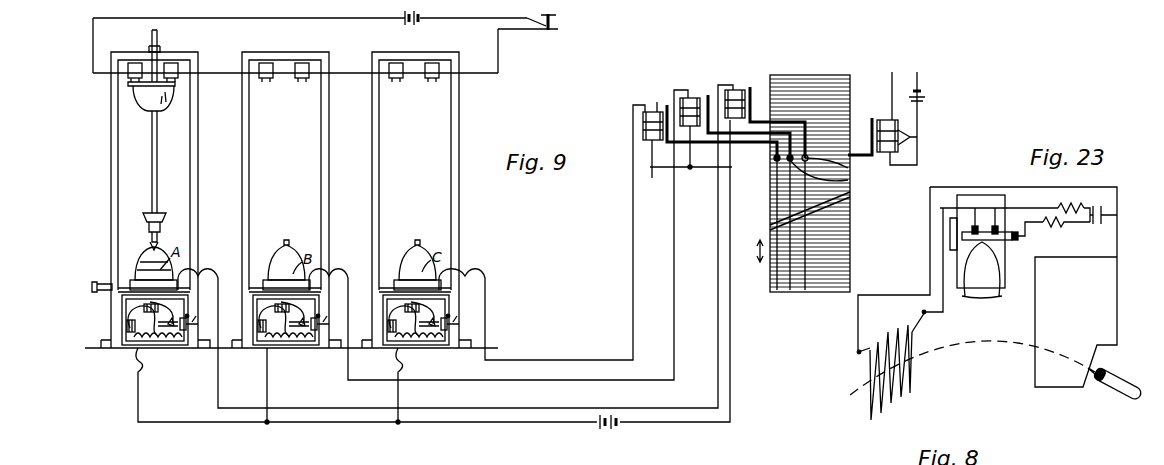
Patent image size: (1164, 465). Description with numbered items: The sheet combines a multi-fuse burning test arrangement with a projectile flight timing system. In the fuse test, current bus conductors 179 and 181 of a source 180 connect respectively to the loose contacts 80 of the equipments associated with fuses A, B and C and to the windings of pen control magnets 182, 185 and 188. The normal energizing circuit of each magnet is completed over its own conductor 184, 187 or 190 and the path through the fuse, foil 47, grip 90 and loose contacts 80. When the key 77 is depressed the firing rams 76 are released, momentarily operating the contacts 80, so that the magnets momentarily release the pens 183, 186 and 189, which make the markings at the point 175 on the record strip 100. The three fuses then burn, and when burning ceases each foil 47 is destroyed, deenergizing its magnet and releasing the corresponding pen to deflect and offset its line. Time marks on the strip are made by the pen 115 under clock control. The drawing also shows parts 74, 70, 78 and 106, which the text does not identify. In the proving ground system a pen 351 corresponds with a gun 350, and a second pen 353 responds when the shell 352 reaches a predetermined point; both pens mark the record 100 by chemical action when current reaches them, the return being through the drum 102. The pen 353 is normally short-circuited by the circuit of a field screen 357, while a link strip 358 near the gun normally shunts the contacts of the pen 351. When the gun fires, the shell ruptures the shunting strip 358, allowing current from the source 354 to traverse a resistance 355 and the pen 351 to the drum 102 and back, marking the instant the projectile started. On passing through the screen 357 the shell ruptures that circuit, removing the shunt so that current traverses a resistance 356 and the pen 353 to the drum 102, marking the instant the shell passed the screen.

In FIG. 9, the contacts 74 is at (133, 63).
In FIG. 9, the firing rams 76 is at (150, 103).
In FIG. 9, the rod 70 is at (157, 173).
In FIG. 9, the battery 78 is at (420, 20).
In FIG. 9, the key 77 is at (558, 22).
In FIG. 9, the loose contacts 80 is at (285, 320).
In FIG. 9, the foil 47 is at (297, 311).
In FIG. 9, the grip 90 is at (329, 325).
In FIG. 9, the current bus conductor 179 is at (387, 425).
In FIG. 9, the source 180 is at (622, 425).
In FIG. 9, the conductor 190 is at (633, 218).
In FIG. 9, the conductor 187 is at (676, 245).
In FIG. 9, the conductor 184 is at (720, 251).
In FIG. 9, the current bus conductor 181 is at (732, 309).
In FIG. 9, the pen control magnet 188 is at (659, 96).
In FIG. 9, the pen control magnet 185 is at (695, 98).
In FIG. 9, the pen control magnet 182 is at (740, 90).
In FIG. 9, the pen 189 is at (776, 163).
In FIG. 9, the strip 100 is at (851, 233).
In FIG. 23, the strip 100 is at (1006, 290).
In FIG. 9, the point 175 is at (768, 268).
In FIG. 9, the pen 115 is at (864, 136).
In FIG. 9, the pen 183 is at (848, 168).
In FIG. 9, the pen 186 is at (848, 181).
In FIG. 9, the relay 106 is at (912, 138).
In FIG. 23, the second pen 353 is at (968, 292).
In FIG. 23, the drum 102 is at (1009, 234).
In FIG. 23, the pen 351 is at (1004, 261).
In FIG. 23, the resistance 356 is at (1074, 207).
In FIG. 23, the resistance 355 is at (1054, 227).
In FIG. 23, the source 354 is at (1101, 227).
In FIG. 23, the field screen 357 is at (893, 341).
In FIG. 23, the shell 352 is at (850, 399).
In FIG. 23, the link strip 358 is at (1093, 366).
In FIG. 23, the gun 350 is at (1126, 392).